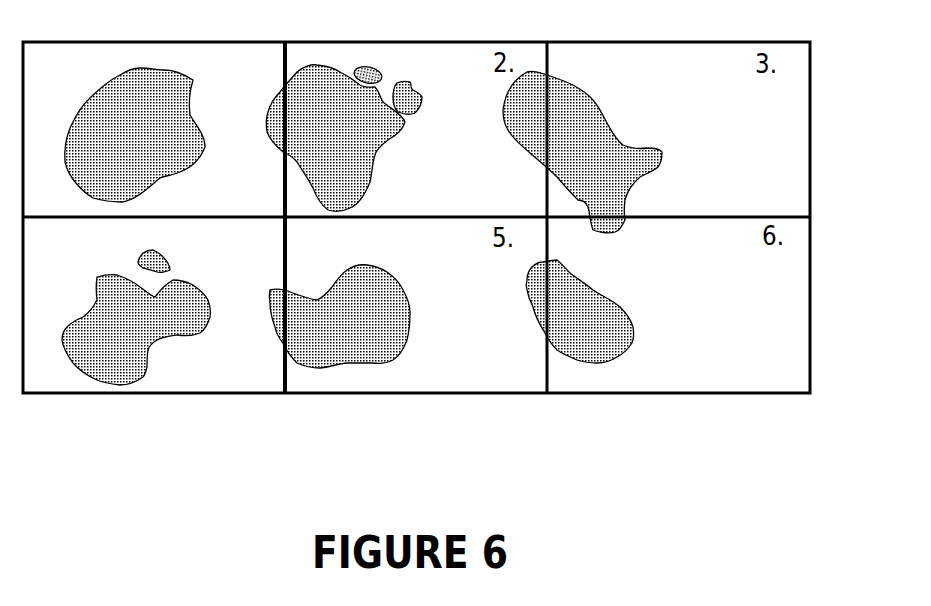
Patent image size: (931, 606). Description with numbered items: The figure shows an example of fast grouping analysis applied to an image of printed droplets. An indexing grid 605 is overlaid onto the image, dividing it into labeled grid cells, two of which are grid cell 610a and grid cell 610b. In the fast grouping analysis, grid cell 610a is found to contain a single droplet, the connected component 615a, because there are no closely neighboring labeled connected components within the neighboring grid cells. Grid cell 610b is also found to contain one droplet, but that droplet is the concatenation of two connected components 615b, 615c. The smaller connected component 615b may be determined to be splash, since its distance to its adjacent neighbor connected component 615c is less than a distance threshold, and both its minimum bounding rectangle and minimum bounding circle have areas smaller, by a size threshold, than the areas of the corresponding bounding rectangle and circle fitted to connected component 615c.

The indexing grid 605 is at (810, 52).
The grid cell 610a is at (228, 56).
The grid cell 610b is at (225, 243).
The connected component 615a is at (125, 87).
The connected component 615b is at (140, 258).
The connected component 615c is at (147, 365).